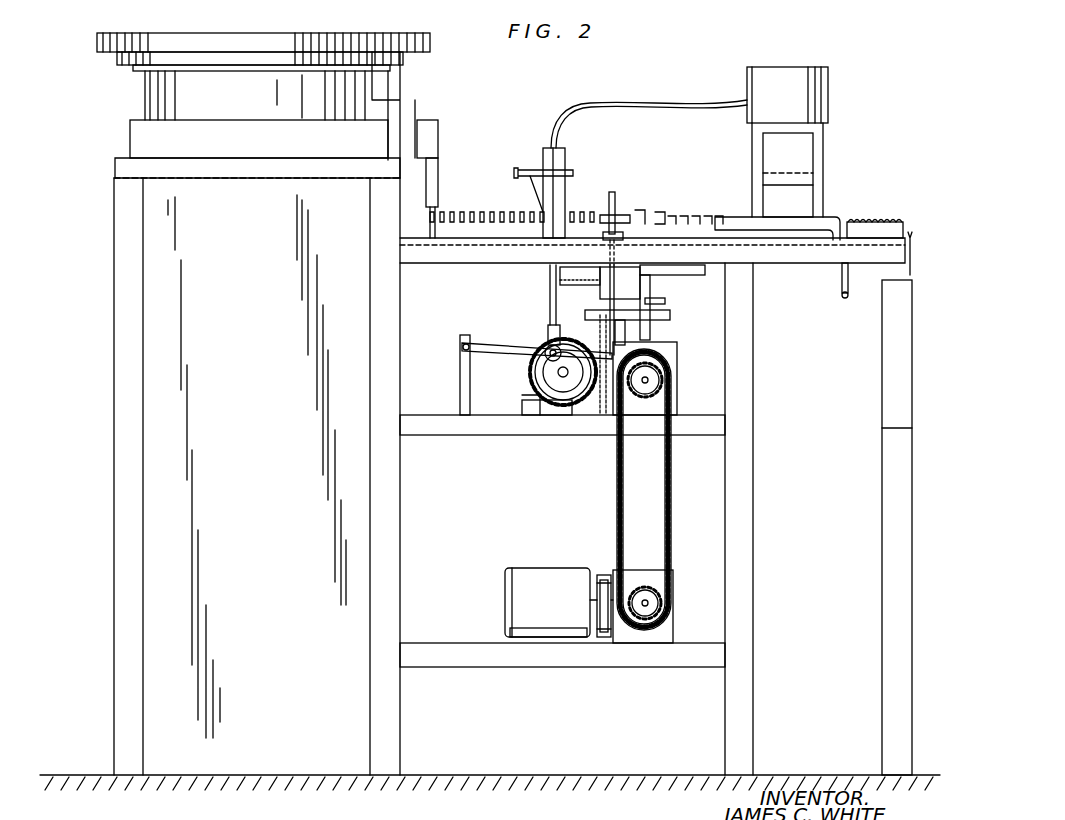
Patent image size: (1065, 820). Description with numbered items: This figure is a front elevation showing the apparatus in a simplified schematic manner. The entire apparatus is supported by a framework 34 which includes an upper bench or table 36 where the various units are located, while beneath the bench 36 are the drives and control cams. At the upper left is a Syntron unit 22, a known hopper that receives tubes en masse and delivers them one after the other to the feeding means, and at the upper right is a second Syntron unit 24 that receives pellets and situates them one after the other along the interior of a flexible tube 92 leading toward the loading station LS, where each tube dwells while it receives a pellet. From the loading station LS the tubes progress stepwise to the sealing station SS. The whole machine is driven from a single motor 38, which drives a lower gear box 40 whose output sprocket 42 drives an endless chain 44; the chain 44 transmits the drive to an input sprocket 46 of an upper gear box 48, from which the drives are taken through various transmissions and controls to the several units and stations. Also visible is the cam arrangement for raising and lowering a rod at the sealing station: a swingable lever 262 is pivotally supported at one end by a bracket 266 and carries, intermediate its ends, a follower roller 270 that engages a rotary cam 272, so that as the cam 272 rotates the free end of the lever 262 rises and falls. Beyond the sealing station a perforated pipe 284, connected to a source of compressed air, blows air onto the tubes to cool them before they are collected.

The Syntron unit 22 is at (88, 40).
The Syntron unit 24 is at (840, 90).
The framework 34 is at (408, 470).
The bench or table 36 is at (790, 267).
The motor 38 is at (518, 616).
The lower gear box 40 is at (666, 621).
The output sprocket 42 is at (660, 592).
The endless chain 44 is at (621, 483).
The input sprocket 46 is at (662, 383).
The upper gear box 48 is at (678, 358).
The flexible tube 92 is at (620, 104).
The swingable lever 262 is at (506, 346).
The bracket 266 is at (462, 374).
The follower roller 270 is at (549, 346).
The rotary cam 272 is at (572, 407).
The pipe 284 is at (852, 312).
The loading station LS is at (532, 196).
The sealing station SS is at (628, 203).